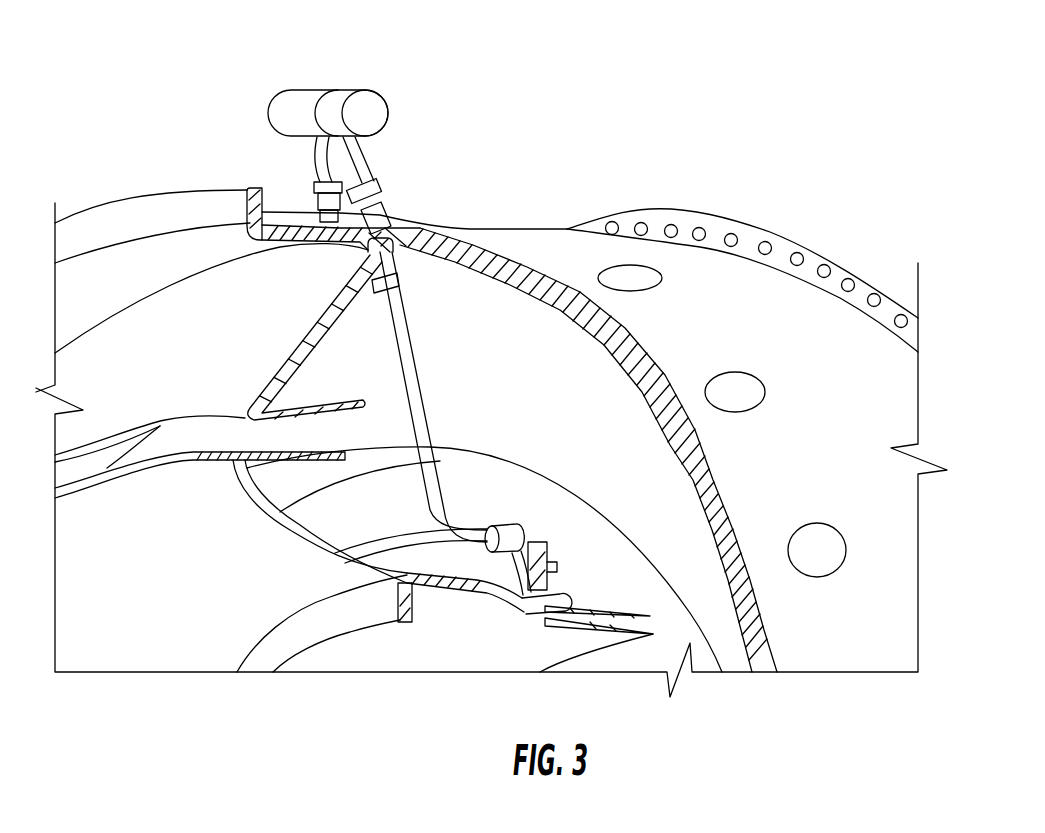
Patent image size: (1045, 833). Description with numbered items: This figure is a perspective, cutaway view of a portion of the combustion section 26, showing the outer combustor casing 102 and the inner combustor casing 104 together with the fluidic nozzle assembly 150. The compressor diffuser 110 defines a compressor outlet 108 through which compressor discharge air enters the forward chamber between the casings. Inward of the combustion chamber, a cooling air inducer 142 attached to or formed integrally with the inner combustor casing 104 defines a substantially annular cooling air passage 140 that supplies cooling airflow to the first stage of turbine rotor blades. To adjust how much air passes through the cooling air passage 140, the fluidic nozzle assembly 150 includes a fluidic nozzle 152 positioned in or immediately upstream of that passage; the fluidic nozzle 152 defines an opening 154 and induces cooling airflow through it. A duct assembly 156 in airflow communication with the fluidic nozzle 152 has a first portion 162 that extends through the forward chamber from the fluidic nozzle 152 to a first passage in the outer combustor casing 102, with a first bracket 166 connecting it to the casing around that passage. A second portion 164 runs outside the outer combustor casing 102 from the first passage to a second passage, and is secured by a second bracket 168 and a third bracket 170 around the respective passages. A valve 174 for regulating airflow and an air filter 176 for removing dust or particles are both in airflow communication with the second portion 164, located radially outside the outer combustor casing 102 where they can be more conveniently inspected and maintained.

The combustion section 26 is at (559, 86).
The outer combustor casing 102 is at (493, 230).
The inner combustor casing 104 is at (448, 583).
The compressor outlet 108 is at (350, 432).
The compressor diffuser 110 is at (306, 410).
The cooling air passage 140 is at (603, 624).
The cooling air inducer 142 is at (606, 613).
The fluidic nozzle assembly 150 is at (418, 62).
The fluidic nozzle 152 is at (560, 612).
The opening 154 is at (515, 604).
The duct assembly 156 is at (420, 317).
The first portion 162 is at (420, 384).
The second portion 164 is at (257, 133).
The first bracket 166 is at (388, 270).
The second bracket 168 is at (370, 208).
The third bracket 170 is at (322, 202).
The valve 174 is at (343, 100).
The air filter 176 is at (302, 103).